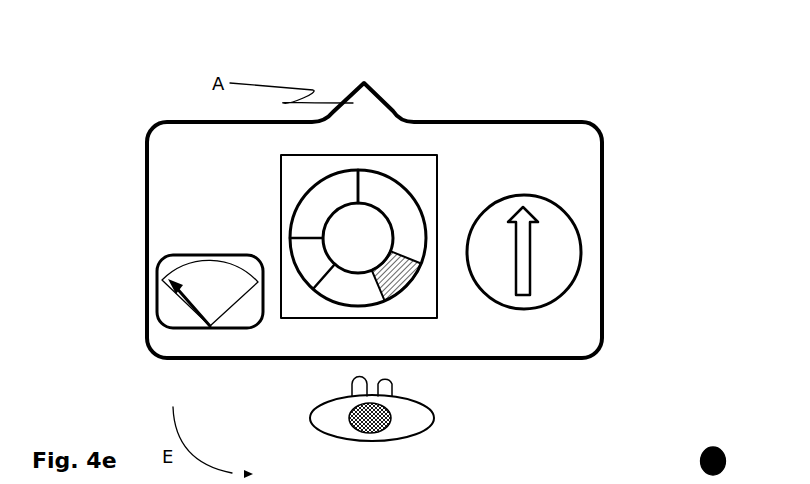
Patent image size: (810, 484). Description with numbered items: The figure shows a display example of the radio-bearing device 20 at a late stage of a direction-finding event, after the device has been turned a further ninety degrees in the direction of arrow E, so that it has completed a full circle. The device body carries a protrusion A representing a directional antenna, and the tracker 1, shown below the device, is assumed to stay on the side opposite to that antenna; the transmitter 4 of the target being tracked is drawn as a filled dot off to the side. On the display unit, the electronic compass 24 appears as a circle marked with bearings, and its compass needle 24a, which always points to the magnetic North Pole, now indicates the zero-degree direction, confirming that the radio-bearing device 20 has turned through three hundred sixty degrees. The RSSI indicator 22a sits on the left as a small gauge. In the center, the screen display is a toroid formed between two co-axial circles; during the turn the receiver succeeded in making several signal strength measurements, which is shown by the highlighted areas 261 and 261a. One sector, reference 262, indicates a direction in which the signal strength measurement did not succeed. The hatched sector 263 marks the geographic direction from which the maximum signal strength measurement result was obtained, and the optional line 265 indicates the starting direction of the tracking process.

The tracker 1 is at (322, 420).
The transmitter 4 is at (717, 447).
The radio-bearing device 20 is at (577, 312).
The RSSI indicator 22a is at (168, 303).
The electronic compass 24 is at (563, 227).
The compass needle 24a is at (527, 217).
The highlighted area 261 is at (405, 217).
The highlighted area 261a is at (317, 210).
The direction of unsuccessful measurement 262 is at (305, 257).
The direction of maximum signal strength 263 is at (407, 293).
The starting direction line 265 is at (358, 183).